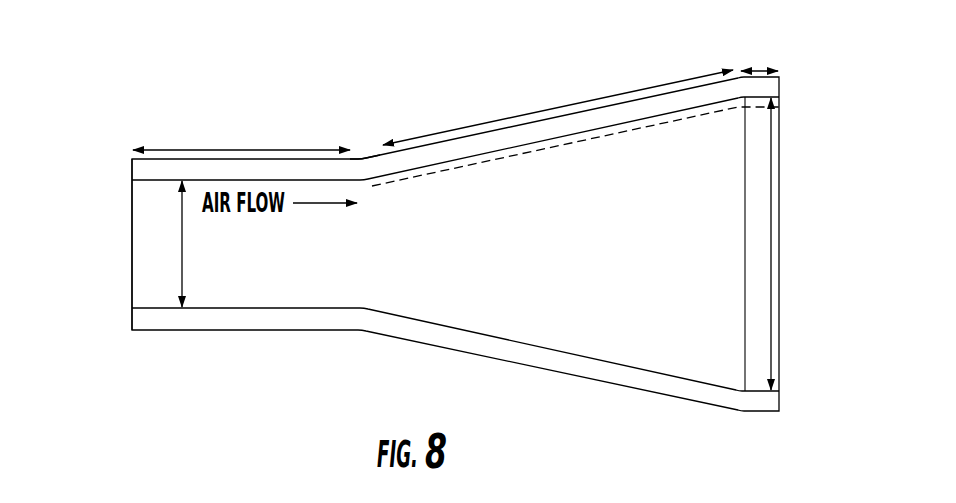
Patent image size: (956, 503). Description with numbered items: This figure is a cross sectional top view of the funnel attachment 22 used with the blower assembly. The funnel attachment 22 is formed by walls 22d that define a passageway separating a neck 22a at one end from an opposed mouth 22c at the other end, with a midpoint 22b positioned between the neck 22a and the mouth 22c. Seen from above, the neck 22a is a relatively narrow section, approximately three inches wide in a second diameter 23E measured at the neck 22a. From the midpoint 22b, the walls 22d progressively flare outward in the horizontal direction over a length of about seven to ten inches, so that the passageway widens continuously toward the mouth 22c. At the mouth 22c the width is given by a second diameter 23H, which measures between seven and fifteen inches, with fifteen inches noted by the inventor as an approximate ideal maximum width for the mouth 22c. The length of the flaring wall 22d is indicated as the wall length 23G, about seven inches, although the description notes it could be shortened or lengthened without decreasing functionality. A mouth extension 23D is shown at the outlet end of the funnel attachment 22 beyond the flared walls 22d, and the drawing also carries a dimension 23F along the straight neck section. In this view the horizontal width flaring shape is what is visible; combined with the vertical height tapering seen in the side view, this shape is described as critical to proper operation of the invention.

The funnel attachment 22 is at (661, 420).
The neck of funnel 22a is at (127, 154).
The midpoint 22b is at (369, 156).
The mouth of funnel 22c is at (732, 227).
The wall 22d is at (575, 112).
The mouth extension 23D is at (757, 70).
The second diameter (width) measured at neck 23E is at (178, 274).
The inlet section length 23F is at (234, 149).
The length of wall 23G is at (518, 115).
The second diameter (width) measured at mouth 23H is at (772, 253).